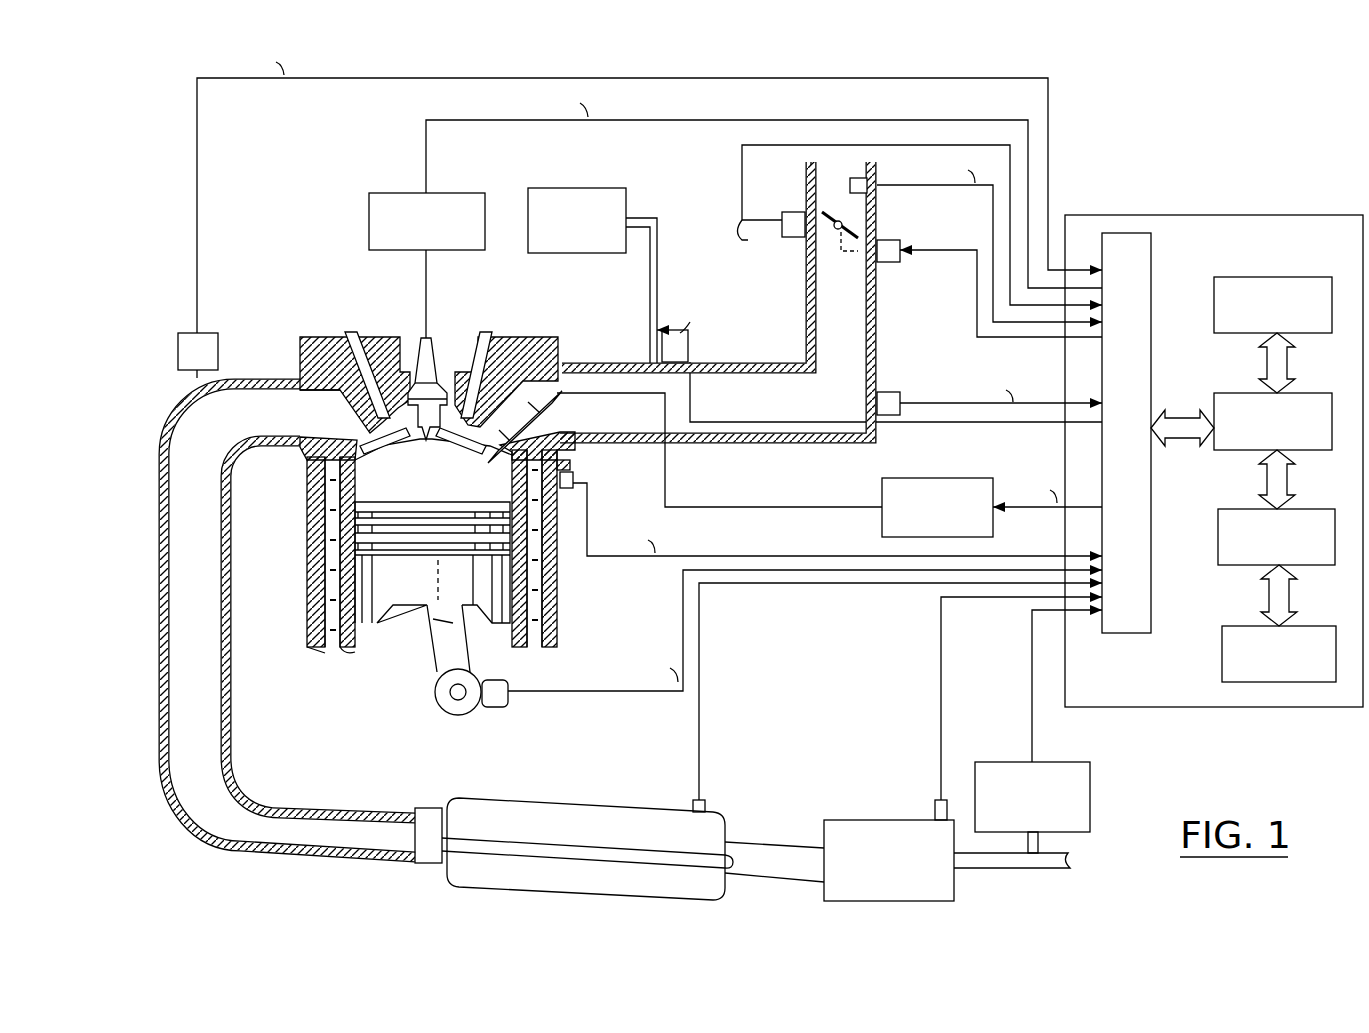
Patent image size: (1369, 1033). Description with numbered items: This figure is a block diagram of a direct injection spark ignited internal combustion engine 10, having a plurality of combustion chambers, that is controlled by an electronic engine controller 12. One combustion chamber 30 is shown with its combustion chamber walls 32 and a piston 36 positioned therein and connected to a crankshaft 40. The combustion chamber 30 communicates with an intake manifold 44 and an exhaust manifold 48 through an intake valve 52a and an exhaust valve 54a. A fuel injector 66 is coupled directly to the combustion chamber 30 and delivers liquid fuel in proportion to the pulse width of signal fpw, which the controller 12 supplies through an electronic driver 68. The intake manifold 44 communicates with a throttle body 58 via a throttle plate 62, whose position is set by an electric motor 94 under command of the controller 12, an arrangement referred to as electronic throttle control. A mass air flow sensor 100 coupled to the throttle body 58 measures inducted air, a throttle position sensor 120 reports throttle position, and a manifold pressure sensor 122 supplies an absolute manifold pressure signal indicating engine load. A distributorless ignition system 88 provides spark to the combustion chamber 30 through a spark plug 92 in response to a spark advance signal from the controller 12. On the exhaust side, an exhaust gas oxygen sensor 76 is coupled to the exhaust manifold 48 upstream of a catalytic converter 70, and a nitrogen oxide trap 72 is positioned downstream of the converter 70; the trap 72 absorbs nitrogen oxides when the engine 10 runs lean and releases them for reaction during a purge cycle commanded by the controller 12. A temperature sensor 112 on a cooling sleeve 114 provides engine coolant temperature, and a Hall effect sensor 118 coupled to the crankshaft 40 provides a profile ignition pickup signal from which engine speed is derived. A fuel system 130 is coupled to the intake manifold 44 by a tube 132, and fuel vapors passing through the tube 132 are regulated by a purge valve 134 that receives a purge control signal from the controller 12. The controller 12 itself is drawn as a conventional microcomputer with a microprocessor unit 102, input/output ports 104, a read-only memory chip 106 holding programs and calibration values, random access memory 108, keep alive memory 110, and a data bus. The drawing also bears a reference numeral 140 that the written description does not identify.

The direct injection spark ignited internal combustion engine 10 is at (425, 350).
The electronic engine controller 12 is at (1214, 439).
The combustion chamber 30 is at (317, 552).
The combustion chamber walls 32 is at (321, 675).
The piston 36 is at (432, 583).
The crankshaft 40 is at (433, 673).
The intake manifold 44 is at (715, 300).
The exhaust manifold 48 is at (272, 620).
The intake valve 52a is at (507, 360).
The exhaust valve 54a is at (337, 393).
The throttle body 58 is at (792, 239).
The throttle plate 62 is at (809, 249).
The fuel injector 66 is at (685, 415).
The electronic driver 68 is at (992, 489).
The catalytic converter 70 is at (758, 741).
The NOx trap 72 is at (963, 749).
The exhaust gas oxygen sensor 76 is at (623, 215).
The distributorless ignition system 88 is at (709, 216).
The spark plug 92 is at (412, 368).
The electric motor 94 is at (989, 269).
The mass air flow sensor 100 is at (976, 206).
The microprocessor unit 102 is at (1263, 400).
The input/output ports 104 is at (1161, 431).
The read-only memory chip 106 is at (1273, 286).
The random access memory 108 is at (1260, 517).
The keep alive memory 110 is at (1260, 634).
The temperature sensor 112 is at (829, 506).
The cooling sleeve 114 is at (577, 548).
The Hall effect sensor 118 is at (792, 649).
The throttle position sensor 120 is at (888, 225).
The manifold pressure sensor 122 is at (989, 377).
The fuel system 130 is at (598, 197).
The tube 132 is at (623, 291).
The purge valve 134 is at (843, 324).
The exhaust gas sensor 140 is at (1034, 754).